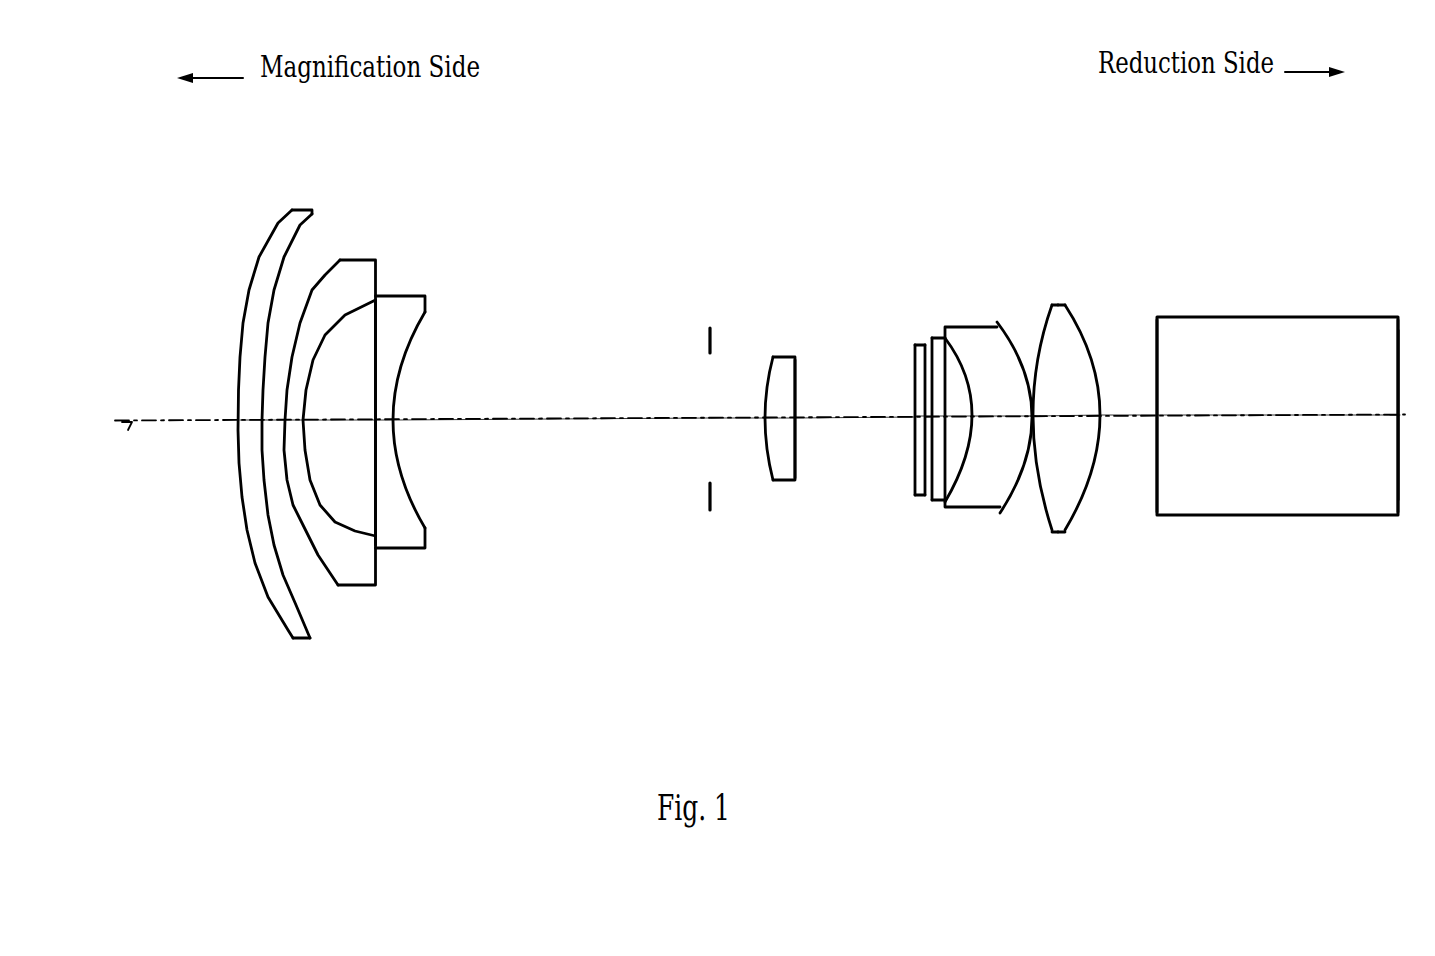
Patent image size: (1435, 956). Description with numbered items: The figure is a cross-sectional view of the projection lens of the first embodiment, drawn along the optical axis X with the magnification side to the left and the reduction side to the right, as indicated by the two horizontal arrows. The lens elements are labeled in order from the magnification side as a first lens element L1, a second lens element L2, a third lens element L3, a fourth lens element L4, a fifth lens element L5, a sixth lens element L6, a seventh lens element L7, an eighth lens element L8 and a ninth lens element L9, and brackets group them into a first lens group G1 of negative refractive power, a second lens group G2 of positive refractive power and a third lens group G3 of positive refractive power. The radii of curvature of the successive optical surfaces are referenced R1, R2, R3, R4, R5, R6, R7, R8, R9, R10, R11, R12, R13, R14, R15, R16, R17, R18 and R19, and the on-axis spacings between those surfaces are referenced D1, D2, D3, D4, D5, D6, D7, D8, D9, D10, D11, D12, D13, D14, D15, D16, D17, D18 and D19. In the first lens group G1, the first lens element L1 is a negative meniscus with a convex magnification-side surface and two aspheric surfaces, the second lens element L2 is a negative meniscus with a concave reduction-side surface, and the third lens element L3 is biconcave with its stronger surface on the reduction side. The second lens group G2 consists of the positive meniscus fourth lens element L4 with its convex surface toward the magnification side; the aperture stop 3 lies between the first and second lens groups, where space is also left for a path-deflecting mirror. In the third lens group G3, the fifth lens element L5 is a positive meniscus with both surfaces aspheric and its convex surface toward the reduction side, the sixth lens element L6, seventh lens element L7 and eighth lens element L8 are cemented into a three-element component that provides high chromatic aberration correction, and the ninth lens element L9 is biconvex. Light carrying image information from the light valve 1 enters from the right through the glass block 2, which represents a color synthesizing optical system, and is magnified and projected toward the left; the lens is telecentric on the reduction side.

The light valve 1 is at (1400, 442).
The glass block 2 is at (1273, 401).
The aperture stop 3 is at (684, 419).
The optical axis X is at (130, 426).
The first lens group G1 is at (323, 389).
The second lens group G2 is at (780, 336).
The third lens group G3 is at (988, 392).
The first lens element L1 is at (258, 429).
The second lens element L2 is at (345, 435).
The third lens element L3 is at (394, 464).
The fourth lens element L4 is at (780, 438).
The fifth lens element L5 is at (890, 390).
The sixth lens element L6 is at (919, 436).
The seventh lens element L7 is at (988, 496).
The eighth lens element L8 is at (1046, 410).
The ninth lens element L9 is at (1086, 402).
The radius of curvature of first optical surface R1 is at (256, 278).
The radius of curvature of second optical surface R2 is at (300, 253).
The radius of curvature of third optical surface R3 is at (296, 312).
The radius of curvature of fourth optical surface R4 is at (323, 333).
The radius of curvature of fifth optical surface R5 is at (378, 440).
The radius of curvature of sixth optical surface R6 is at (414, 343).
The radius of curvature of seventh optical surface R7 is at (705, 342).
The radius of curvature of eighth optical surface R8 is at (765, 378).
The radius of curvature of ninth optical surface R9 is at (797, 383).
The radius of curvature of tenth optical surface R10 is at (913, 378).
The radius of curvature of eleventh optical surface R11 is at (934, 340).
The radius of curvature of twelfth optical surface R12 is at (912, 495).
The radius of curvature of thirteenth optical surface R13 is at (968, 335).
The radius of curvature of fourteenth optical surface R14 is at (998, 508).
The radius of curvature of fifteenth optical surface R15 is at (1025, 343).
The radius of curvature of sixteenth optical surface R16 is at (1037, 352).
The radius of curvature of seventeenth optical surface R17 is at (1085, 340).
The radius of curvature of eighteenth optical surface R18 is at (1155, 367).
The radius of curvature of nineteenth optical surface R19 is at (1400, 323).
The on-axis surface spacing D1 is at (226, 408).
The on-axis surface spacing D2 is at (260, 443).
The on-axis surface spacing D3 is at (300, 428).
The on-axis surface spacing D4 is at (370, 410).
The on-axis surface spacing D5 is at (398, 409).
The on-axis surface spacing D6 is at (482, 418).
The on-axis surface spacing D7 is at (744, 422).
The on-axis surface spacing D8 is at (760, 407).
The on-axis surface spacing D9 is at (826, 418).
The on-axis surface spacing D10 is at (912, 410).
The on-axis surface spacing D11 is at (907, 443).
The on-axis surface spacing D12 is at (910, 398).
The on-axis surface spacing D13 is at (987, 413).
The on-axis surface spacing D14 is at (1023, 423).
The on-axis surface spacing D15 is at (1070, 397).
The on-axis surface spacing D16 is at (1085, 418).
The on-axis surface spacing D17 is at (1127, 422).
The on-axis surface spacing D18 is at (1237, 413).
The on-axis surface spacing D19 is at (1387, 418).